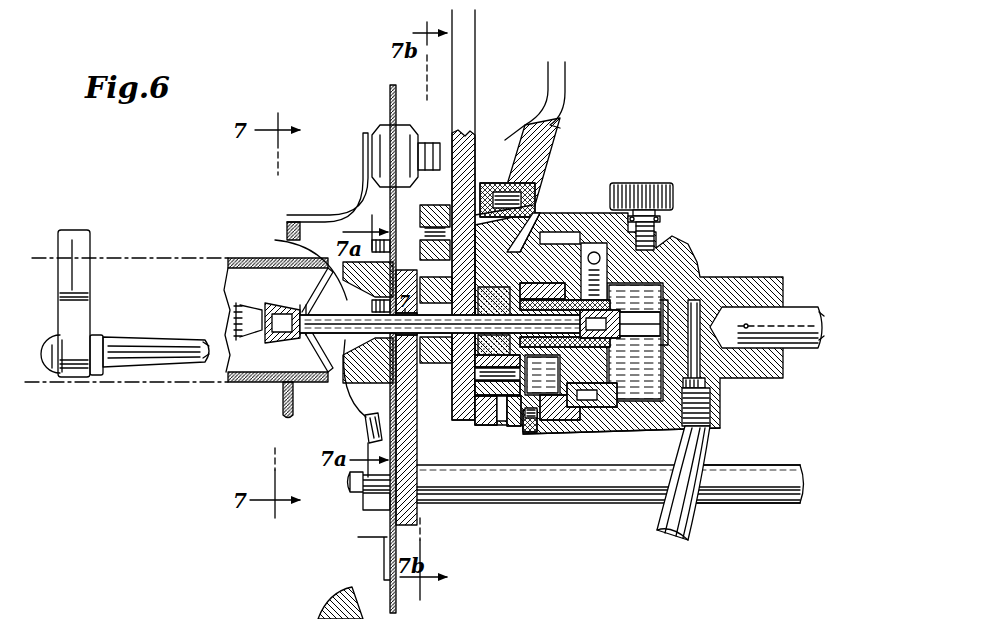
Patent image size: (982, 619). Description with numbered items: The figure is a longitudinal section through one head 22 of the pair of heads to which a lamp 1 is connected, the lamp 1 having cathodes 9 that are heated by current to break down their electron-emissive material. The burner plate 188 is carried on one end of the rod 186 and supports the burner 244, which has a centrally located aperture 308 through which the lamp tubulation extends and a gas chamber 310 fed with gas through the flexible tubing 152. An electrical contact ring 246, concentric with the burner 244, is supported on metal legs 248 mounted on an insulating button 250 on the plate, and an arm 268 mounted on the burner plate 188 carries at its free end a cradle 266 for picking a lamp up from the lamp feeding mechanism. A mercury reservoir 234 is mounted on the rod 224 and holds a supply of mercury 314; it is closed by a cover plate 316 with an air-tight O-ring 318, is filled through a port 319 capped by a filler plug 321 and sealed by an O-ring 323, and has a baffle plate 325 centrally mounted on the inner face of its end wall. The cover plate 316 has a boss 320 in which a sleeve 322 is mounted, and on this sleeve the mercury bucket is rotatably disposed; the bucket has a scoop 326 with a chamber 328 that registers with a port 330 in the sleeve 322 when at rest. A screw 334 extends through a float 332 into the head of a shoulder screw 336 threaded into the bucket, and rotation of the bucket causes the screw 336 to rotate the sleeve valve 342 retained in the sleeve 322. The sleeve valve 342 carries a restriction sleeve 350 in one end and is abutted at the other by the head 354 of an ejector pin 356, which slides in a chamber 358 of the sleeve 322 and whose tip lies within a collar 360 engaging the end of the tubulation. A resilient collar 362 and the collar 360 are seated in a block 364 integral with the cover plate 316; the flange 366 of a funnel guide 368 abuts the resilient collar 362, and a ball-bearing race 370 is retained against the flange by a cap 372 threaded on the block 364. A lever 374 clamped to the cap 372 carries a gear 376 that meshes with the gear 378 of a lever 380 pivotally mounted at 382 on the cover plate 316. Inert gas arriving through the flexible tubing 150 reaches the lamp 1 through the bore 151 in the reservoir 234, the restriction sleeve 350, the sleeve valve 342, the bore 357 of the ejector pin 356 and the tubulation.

The lamp 1 is at (258, 262).
The cathodes 9 is at (236, 313).
The head 22 is at (686, 106).
The flexible tubing 150 is at (680, 515).
The bore 151 is at (697, 355).
The flexible tubing 152 is at (363, 430).
The rod 186 is at (733, 475).
The burner plate 188 is at (389, 101).
The rod 224 is at (798, 315).
The mercury reservoir 234 is at (688, 252).
The burner 244 is at (327, 250).
The electrical contact ring 246 is at (286, 403).
The metal legs 248 is at (360, 171).
The insulating button 250 is at (407, 127).
The cradle 266 is at (75, 240).
The arm 268 is at (145, 346).
The aperture 308 is at (358, 338).
The gas chamber 310 is at (376, 367).
The mercury 314 is at (697, 403).
The cover plate 316 is at (526, 440).
The O-ring 318 is at (540, 443).
The port 319 is at (657, 232).
The boss 320 is at (540, 308).
The filler plug 321 is at (640, 183).
The sleeve 322 is at (557, 314).
The O-ring 323 is at (662, 219).
The baffle plate 325 is at (655, 320).
The scoop 326 is at (585, 243).
The chamber 328 is at (592, 258).
The port 330 is at (607, 280).
The float 332 is at (592, 420).
The screw 334 is at (620, 422).
The shoulder screw 336 is at (690, 375).
The sleeve valve 342 is at (608, 317).
The restriction sleeve 350 is at (618, 317).
The head 354 is at (558, 430).
The ejector pin 356 is at (537, 433).
The bore 357 is at (490, 408).
The chamber 358 is at (537, 292).
The collar 360 is at (478, 287).
The resilient collar 362 is at (535, 217).
The block 364 is at (477, 412).
The flange 366 is at (473, 410).
The funnel guide 368 is at (473, 360).
The ball-bearing race 370 is at (473, 375).
The cap 372 is at (473, 390).
The lever 374 is at (472, 82).
The gear 376 is at (492, 440).
The gear 378 is at (497, 228).
The lever 380 is at (566, 78).
The pivot 382 is at (500, 190).